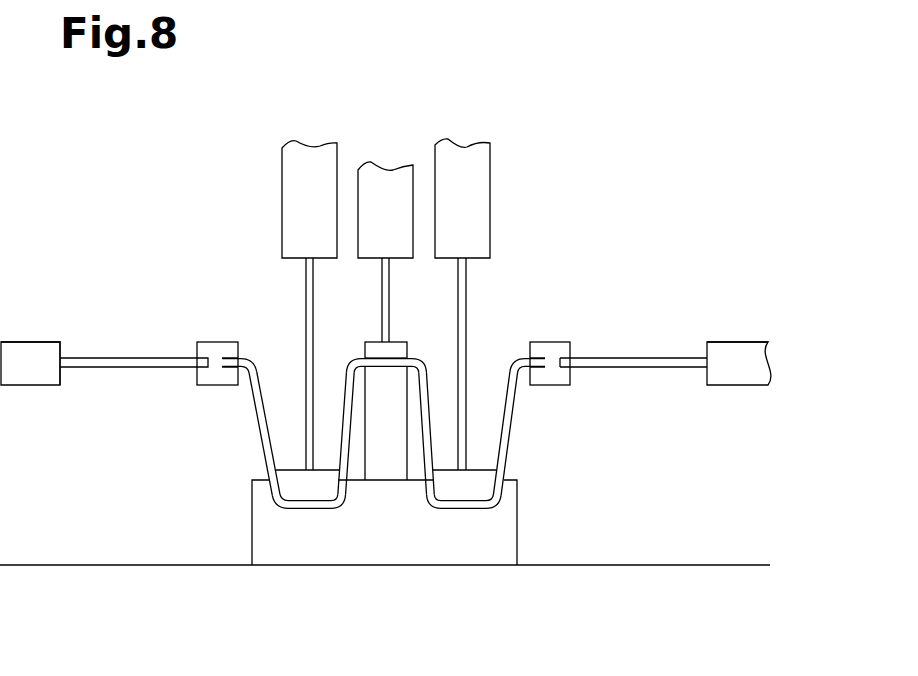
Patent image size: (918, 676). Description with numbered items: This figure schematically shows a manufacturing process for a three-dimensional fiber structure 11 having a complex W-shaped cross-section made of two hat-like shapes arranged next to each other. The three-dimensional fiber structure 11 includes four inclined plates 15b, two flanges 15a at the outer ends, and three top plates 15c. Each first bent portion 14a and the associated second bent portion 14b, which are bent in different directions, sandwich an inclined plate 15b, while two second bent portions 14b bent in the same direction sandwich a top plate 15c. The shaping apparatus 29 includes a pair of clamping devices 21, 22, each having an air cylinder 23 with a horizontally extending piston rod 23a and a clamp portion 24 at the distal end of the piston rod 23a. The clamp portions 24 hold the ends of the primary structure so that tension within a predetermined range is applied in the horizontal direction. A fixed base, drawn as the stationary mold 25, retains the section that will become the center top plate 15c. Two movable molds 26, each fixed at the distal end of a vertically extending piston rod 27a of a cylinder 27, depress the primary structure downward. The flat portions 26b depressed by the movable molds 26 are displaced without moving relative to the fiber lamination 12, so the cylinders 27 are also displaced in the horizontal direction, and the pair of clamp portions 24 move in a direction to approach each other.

The three-dimensional fiber structure 11 is at (513, 412).
The fiber lamination 12 is at (256, 409).
The first bent portions 14a is at (301, 358).
The second bent portions 14b is at (272, 506).
The flanges 15a is at (224, 372).
The inclined plates 15b is at (261, 438).
The top plates 15c is at (395, 352).
The clamping device 21 is at (42, 330).
The clamping device 22 is at (726, 330).
The air cylinder 23 is at (37, 380).
The piston rod 23a is at (143, 368).
The clamp portion 24 is at (222, 342).
The stationary mold 25 is at (322, 566).
The movable mold 26 is at (288, 466).
The flat portion 26b is at (313, 508).
The cylinder 27 is at (284, 172).
The piston rod 27a is at (305, 301).
The shaping apparatus 29 is at (492, 153).